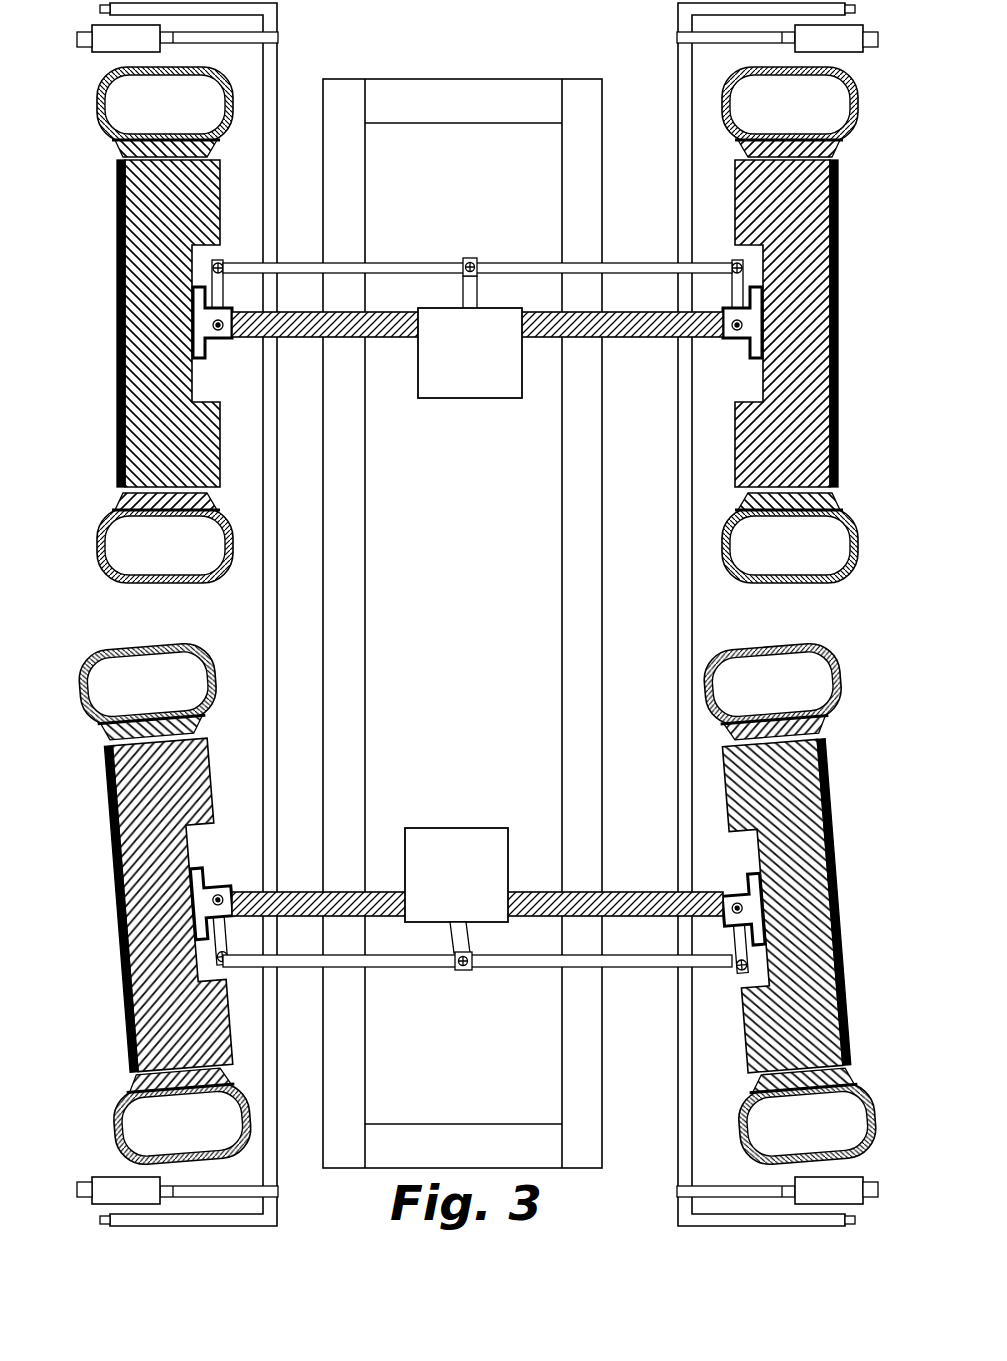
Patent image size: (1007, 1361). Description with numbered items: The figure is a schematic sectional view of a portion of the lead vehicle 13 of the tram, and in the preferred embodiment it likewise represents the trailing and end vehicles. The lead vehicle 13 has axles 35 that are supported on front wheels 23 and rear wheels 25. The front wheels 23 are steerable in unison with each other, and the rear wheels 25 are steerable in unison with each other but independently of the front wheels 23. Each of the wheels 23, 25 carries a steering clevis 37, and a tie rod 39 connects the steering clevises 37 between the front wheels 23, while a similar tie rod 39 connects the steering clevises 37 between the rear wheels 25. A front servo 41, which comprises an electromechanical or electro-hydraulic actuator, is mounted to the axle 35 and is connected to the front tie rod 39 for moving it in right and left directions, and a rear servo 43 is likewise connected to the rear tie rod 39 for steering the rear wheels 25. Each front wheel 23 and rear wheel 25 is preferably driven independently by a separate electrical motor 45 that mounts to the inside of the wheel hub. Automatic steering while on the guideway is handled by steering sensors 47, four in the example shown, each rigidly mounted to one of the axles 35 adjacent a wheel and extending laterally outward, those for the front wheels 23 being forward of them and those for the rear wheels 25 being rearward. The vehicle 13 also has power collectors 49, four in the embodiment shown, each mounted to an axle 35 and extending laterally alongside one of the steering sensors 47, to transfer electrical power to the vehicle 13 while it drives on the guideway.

The lead vehicle 13 is at (309, 77).
The front wheels 23 is at (837, 847).
The rear wheels 25 is at (838, 250).
The axles 35 is at (250, 893).
The steering clevis 37 is at (218, 875).
The tie rod 39 is at (428, 967).
The front servo 41 is at (453, 828).
The rear servo 43 is at (473, 398).
The electrical motor 45 is at (217, 773).
The steering sensor 47 is at (98, 1218).
The power collector 49 is at (85, 1178).